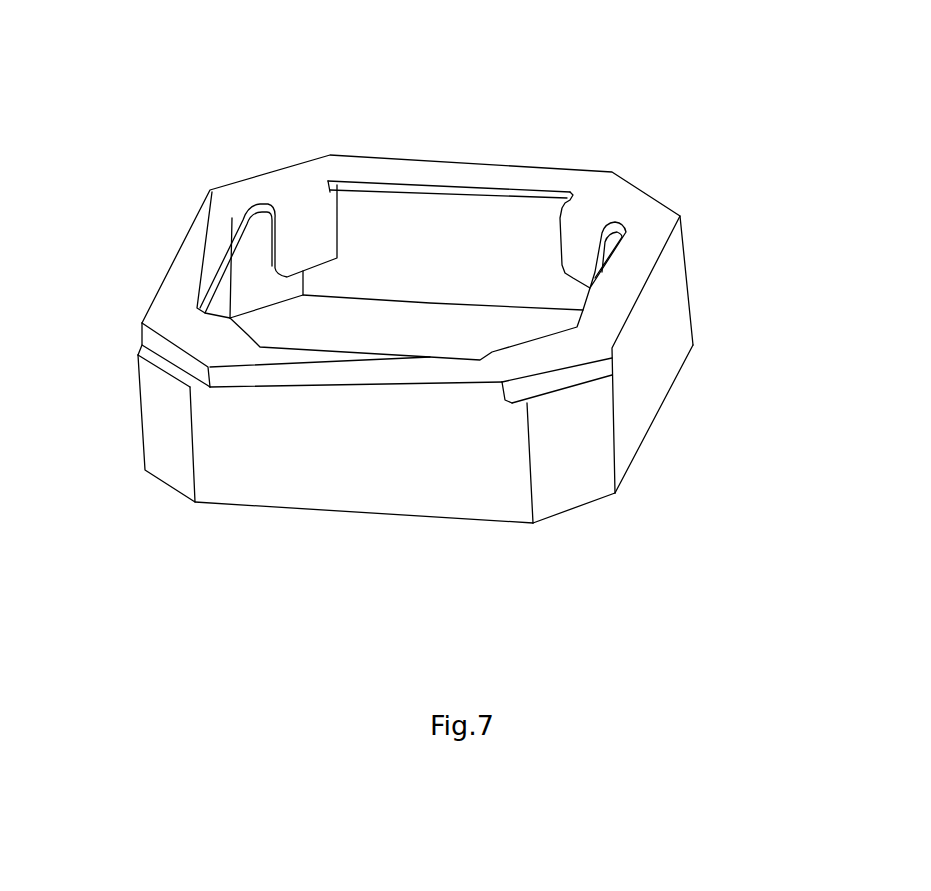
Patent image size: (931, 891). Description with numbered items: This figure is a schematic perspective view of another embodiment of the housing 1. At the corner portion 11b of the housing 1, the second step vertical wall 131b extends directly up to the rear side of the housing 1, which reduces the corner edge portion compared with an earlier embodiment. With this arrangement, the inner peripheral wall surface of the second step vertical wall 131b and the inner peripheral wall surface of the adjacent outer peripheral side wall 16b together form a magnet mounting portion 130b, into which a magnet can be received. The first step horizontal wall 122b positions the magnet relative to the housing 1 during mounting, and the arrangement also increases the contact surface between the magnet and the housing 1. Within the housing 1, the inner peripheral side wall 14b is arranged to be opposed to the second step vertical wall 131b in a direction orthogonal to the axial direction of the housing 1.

The housing 1 is at (70, 85).
The corner portion 11b is at (667, 187).
The inner peripheral side wall 14b is at (578, 250).
The outer peripheral side wall 16b is at (627, 443).
The first step horizontal wall 122b is at (617, 385).
The magnet mounting portion 130b is at (360, 220).
The second step vertical wall 131b is at (578, 472).